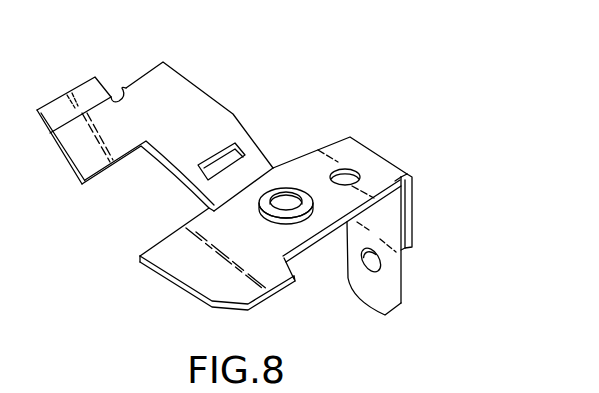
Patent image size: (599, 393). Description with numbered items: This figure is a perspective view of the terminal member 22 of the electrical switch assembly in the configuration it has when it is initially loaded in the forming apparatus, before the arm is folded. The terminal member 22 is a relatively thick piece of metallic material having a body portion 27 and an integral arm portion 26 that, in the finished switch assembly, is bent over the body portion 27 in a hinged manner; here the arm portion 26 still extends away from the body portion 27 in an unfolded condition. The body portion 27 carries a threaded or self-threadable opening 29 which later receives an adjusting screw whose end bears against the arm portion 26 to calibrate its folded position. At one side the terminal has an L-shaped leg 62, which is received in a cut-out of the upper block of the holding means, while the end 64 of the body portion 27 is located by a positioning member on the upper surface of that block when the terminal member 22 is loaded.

The terminal member 22 is at (302, 86).
The arm portion 26 is at (168, 100).
The body portion 27 is at (303, 233).
The threaded opening 29 is at (285, 195).
The L-shaped leg 62 is at (413, 222).
The end of body portion 64 is at (192, 292).